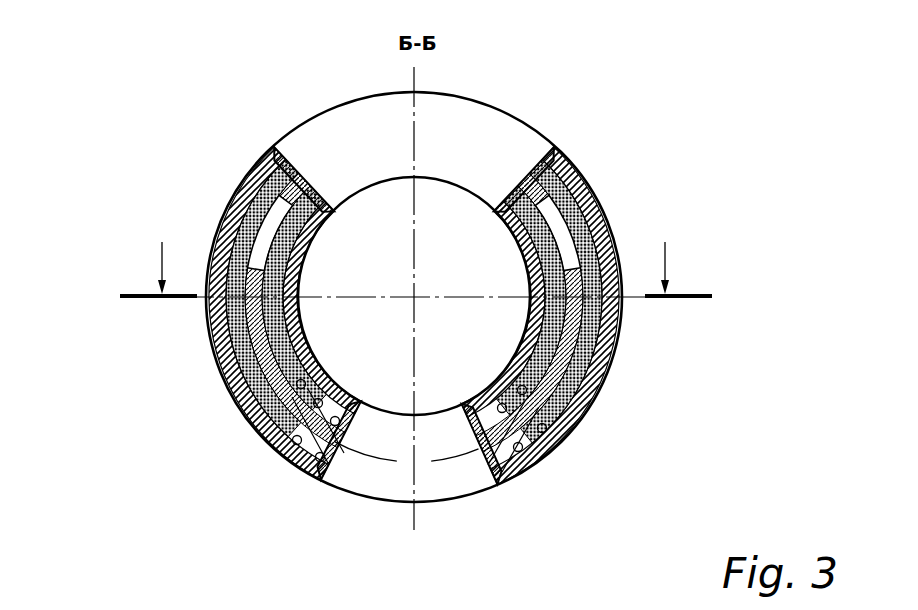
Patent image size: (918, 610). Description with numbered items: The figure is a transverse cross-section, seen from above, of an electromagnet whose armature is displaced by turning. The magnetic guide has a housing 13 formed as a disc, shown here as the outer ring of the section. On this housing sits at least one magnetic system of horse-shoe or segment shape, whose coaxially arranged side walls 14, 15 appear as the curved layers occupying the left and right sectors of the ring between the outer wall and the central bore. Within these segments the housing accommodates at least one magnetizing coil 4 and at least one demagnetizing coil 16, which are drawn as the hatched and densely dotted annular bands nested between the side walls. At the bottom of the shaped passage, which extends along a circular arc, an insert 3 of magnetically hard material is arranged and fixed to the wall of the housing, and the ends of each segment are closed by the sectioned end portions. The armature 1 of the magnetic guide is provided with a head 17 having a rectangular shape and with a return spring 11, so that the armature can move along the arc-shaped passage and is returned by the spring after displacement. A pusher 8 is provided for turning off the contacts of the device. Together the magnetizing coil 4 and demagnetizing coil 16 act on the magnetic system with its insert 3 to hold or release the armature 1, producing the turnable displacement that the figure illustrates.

The armature 1 is at (545, 449).
The insert 3 is at (538, 284).
The magnetizing coil 4 is at (504, 312).
The pusher 8 is at (513, 302).
The return spring 11 is at (526, 312).
The housing 13 is at (508, 259).
The side wall 14 is at (301, 320).
The side wall 15 is at (282, 309).
The demagnetizing coil 16 is at (534, 318).
The head 17 is at (494, 479).